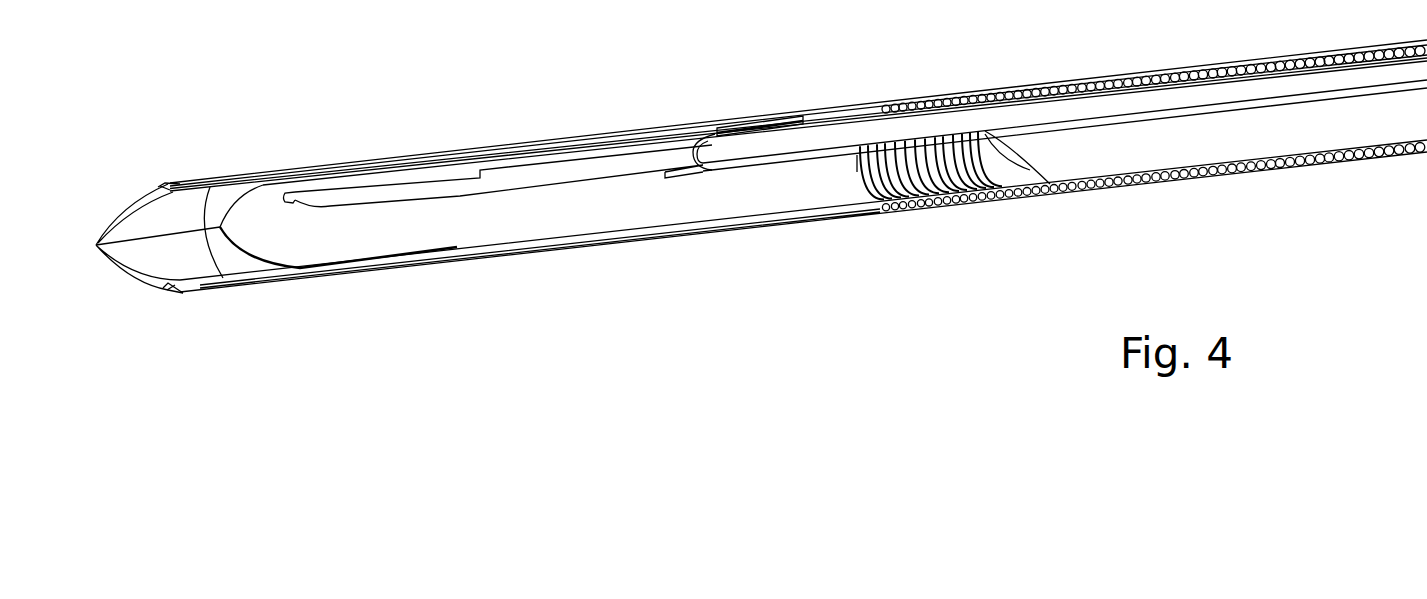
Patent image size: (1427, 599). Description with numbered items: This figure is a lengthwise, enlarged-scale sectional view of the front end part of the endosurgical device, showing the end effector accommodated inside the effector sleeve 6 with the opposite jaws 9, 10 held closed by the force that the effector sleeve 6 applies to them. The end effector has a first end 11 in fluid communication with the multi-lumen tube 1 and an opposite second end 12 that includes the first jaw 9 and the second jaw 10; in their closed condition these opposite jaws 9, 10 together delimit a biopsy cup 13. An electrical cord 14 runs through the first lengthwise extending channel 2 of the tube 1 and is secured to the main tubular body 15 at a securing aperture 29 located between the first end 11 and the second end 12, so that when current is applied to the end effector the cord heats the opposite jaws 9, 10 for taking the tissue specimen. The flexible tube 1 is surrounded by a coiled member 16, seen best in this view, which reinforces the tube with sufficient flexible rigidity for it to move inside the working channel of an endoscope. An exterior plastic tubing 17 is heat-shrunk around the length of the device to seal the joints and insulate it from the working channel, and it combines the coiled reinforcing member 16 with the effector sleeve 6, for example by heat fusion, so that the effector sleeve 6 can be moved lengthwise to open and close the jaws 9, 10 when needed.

The multi-lumen tube 1 is at (1077, 155).
The first lengthwise extending channel 2 is at (683, 153).
The effector sleeve 6 is at (197, 293).
The first jaw 9 is at (148, 222).
The second jaw 10 is at (147, 253).
The first end 11 is at (783, 163).
The second end 12 is at (232, 183).
The biopsy cup 13 is at (171, 229).
The electrical cord 14 is at (433, 183).
The main tubular body 15 is at (532, 230).
The coiled member 16 is at (937, 180).
The exterior plastic tubing 17 is at (955, 98).
The securing aperture 29 is at (290, 200).